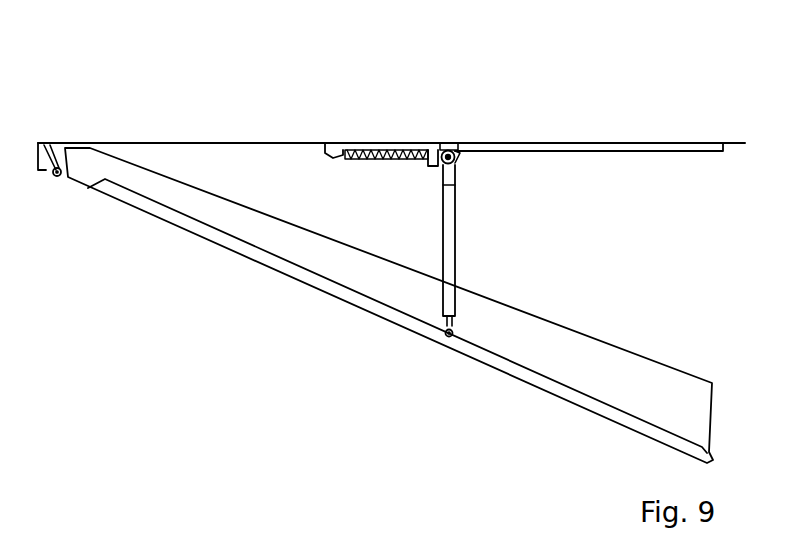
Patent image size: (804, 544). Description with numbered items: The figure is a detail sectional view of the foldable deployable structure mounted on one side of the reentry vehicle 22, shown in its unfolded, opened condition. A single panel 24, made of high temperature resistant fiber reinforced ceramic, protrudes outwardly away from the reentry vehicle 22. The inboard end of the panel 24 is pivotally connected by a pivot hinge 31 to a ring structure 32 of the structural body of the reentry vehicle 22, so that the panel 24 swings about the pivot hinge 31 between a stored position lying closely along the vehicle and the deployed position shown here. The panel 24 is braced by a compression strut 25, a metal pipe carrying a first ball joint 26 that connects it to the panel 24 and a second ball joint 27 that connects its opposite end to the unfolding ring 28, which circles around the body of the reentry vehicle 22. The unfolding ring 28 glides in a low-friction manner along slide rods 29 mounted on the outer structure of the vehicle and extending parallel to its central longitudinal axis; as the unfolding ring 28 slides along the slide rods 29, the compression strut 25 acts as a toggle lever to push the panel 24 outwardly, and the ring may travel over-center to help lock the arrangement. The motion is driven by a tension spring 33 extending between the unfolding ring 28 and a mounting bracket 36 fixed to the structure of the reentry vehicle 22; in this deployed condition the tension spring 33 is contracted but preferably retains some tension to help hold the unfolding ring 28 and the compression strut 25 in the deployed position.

The reentry vehicle 22 is at (215, 143).
The panel 24 is at (392, 310).
The compression strut 25 is at (455, 268).
The first ball joint 26 is at (450, 338).
The second ball joint 27 is at (460, 153).
The unfolding ring 28 is at (452, 145).
The slide rod 29 is at (600, 143).
The pivot hinge 31 is at (57, 178).
The ring structure 32 is at (47, 142).
The tension spring 33 is at (390, 145).
The mounting bracket 36 is at (334, 143).